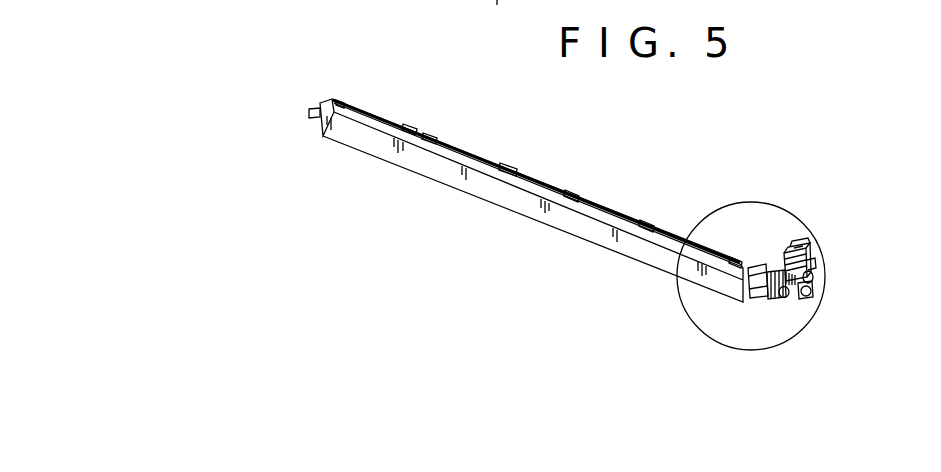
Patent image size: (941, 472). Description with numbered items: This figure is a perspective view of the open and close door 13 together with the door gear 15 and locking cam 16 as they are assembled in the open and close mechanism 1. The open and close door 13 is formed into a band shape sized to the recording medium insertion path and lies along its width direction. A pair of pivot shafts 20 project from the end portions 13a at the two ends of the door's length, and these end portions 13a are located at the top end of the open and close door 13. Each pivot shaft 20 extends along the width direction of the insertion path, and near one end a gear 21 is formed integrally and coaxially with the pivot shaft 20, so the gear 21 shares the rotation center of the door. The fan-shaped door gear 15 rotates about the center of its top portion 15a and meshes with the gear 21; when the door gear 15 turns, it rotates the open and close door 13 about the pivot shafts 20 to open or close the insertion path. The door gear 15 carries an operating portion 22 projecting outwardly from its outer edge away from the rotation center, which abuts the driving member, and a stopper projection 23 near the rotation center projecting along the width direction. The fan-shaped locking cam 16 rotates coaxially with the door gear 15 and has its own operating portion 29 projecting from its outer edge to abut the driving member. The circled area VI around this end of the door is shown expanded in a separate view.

The open and close mechanism 1 is at (597, 180).
The open and close door 13 is at (578, 242).
The end portions 13a is at (316, 106).
The pivot shafts 20 is at (314, 115).
The gear 21 is at (767, 301).
The door gear 15 is at (812, 262).
The top portion 15a is at (808, 280).
The locking cam 16 is at (812, 250).
The operating portion 22 is at (820, 258).
The stopper projection 23 is at (803, 300).
The operating portion 29 is at (800, 244).
The VI area VI is at (759, 204).